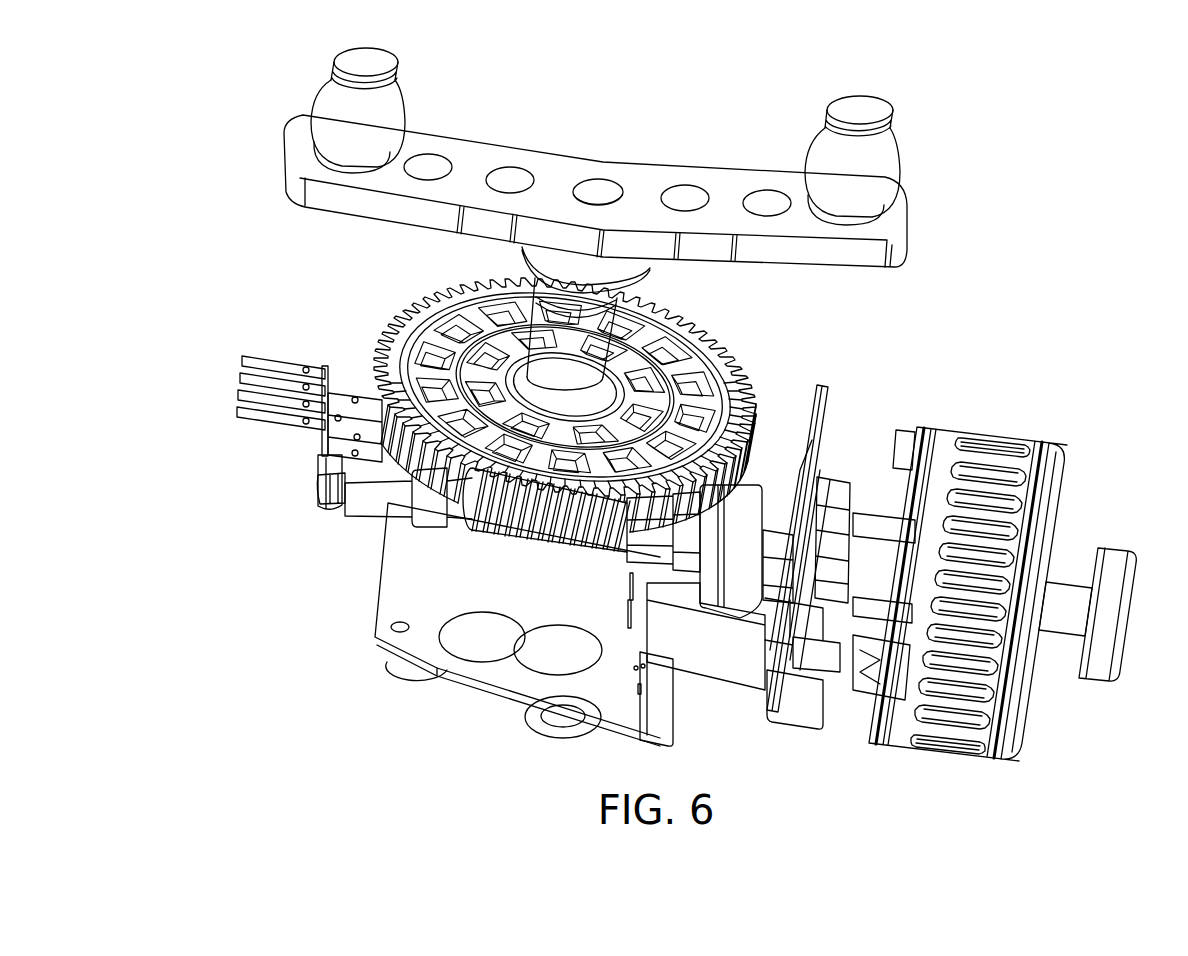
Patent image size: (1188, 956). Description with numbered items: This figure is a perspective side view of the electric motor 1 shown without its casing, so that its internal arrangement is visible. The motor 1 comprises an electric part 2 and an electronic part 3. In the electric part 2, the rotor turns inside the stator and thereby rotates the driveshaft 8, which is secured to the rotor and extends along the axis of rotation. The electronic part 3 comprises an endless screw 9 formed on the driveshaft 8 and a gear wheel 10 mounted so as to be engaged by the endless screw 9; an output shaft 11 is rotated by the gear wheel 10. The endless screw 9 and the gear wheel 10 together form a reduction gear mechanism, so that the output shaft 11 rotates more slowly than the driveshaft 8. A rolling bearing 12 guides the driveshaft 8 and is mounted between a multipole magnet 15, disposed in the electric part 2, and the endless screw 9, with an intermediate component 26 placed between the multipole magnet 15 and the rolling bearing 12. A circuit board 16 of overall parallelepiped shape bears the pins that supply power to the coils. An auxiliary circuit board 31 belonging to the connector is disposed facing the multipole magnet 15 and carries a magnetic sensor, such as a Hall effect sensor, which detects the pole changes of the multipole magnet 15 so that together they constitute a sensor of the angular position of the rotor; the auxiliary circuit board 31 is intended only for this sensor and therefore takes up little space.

The electric motor 1 is at (256, 180).
The electric part 2 is at (1108, 530).
The electronic part 3 is at (332, 574).
The driveshaft 8 is at (783, 547).
The endless screw 9 is at (583, 492).
The gear wheel 10 is at (403, 327).
The output shaft 11 is at (552, 340).
The rolling bearing 12 is at (733, 573).
The multipole magnet 15 is at (837, 493).
The circuit board 16 is at (523, 607).
The intermediate component 26 is at (828, 412).
The auxiliary circuit board 31 is at (810, 663).